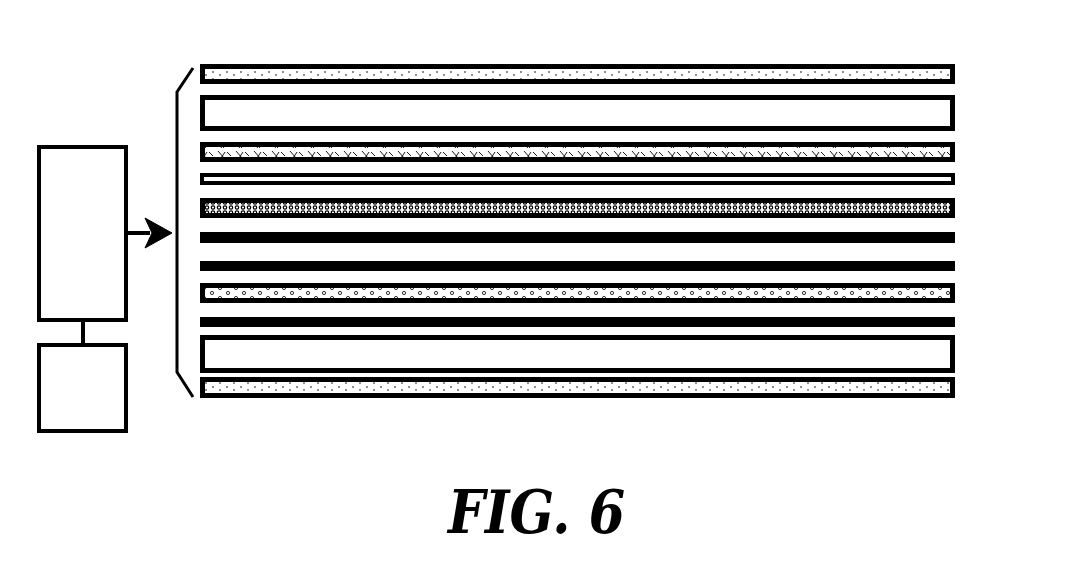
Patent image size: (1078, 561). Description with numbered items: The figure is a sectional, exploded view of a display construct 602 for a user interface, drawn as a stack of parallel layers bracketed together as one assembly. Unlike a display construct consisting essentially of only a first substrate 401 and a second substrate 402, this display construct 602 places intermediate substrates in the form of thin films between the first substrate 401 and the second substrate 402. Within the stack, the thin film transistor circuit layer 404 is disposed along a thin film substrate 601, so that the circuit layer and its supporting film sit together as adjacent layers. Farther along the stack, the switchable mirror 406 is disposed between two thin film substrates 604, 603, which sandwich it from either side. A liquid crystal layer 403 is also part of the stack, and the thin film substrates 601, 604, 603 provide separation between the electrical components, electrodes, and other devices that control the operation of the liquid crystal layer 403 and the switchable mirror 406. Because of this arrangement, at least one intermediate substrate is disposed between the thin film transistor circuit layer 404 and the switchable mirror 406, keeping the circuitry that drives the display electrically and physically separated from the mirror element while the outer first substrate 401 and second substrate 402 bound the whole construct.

The first substrate 401 is at (298, 110).
The second substrate 402 is at (247, 353).
The liquid crystal layer 403 is at (425, 178).
The thin film transistor circuit layer 404 is at (548, 202).
The switchable mirror 406 is at (342, 293).
The thin film substrate 601 is at (530, 237).
The display construct 602 is at (176, 170).
The thin film substrate 603 is at (383, 323).
The thin film substrate 604 is at (472, 267).